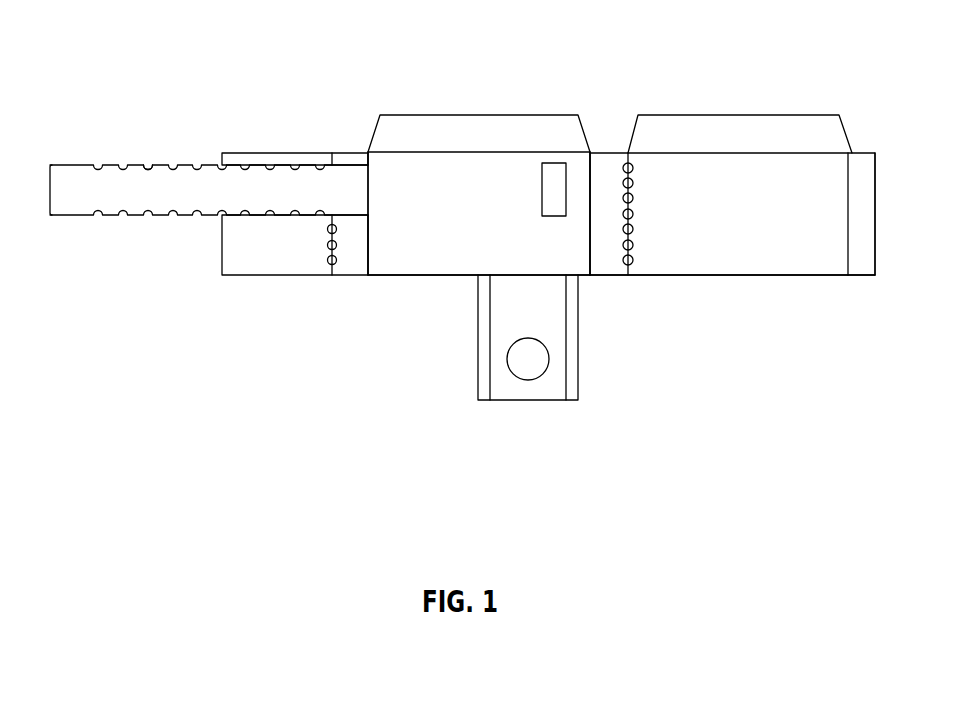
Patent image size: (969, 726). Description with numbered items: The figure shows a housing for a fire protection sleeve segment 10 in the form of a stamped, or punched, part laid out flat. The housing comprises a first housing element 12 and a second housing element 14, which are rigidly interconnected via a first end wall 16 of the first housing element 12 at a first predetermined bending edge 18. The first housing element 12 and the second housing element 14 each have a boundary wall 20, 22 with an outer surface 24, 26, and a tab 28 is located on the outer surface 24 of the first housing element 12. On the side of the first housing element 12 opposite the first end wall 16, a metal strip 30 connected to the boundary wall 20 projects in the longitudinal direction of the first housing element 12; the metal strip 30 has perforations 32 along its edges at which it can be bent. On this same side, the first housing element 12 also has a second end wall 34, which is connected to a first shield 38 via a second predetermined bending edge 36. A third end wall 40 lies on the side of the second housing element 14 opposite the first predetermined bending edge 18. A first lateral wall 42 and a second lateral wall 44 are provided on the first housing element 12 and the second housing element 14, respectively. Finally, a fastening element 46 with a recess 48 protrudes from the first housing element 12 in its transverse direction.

The fire protection sleeve segment 10 is at (203, 431).
The first housing element 12 is at (481, 165).
The second housing element 14 is at (757, 175).
The first end wall 16 is at (603, 185).
The first predetermined bending edge 18 is at (631, 262).
The boundary wall 20 is at (466, 258).
The boundary wall 22 is at (778, 255).
The outer surface 24 is at (388, 252).
The outer surface 26 is at (732, 255).
The tab 28 is at (555, 190).
The metal strip 30 is at (78, 197).
The perforations 32 is at (148, 166).
The second end wall 34 is at (348, 262).
The second predetermined bending edge 36 is at (328, 262).
The first shield 38 is at (227, 258).
The third end wall 40 is at (865, 162).
The first lateral wall 42 is at (418, 125).
The second lateral wall 44 is at (695, 130).
The fastening element 46 is at (502, 400).
The recess 48 is at (528, 365).